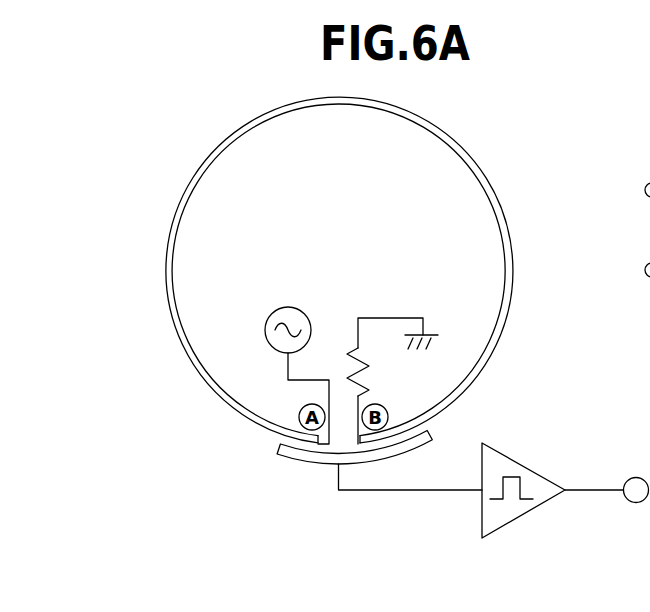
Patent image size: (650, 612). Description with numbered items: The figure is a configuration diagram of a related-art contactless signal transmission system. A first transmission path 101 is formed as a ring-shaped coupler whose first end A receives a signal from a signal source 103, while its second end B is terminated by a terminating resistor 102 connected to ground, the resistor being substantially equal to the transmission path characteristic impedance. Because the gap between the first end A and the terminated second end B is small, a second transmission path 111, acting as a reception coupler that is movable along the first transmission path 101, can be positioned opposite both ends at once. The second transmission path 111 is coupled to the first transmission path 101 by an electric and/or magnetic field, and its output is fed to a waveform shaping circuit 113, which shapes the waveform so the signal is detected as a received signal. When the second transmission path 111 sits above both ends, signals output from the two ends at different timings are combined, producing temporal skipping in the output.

The first transmission path 101 is at (265, 127).
The terminating resistor 102 is at (367, 352).
The signal source 103 is at (289, 306).
The second transmission path 111 is at (292, 462).
The waveform shaping circuit 113 is at (532, 468).